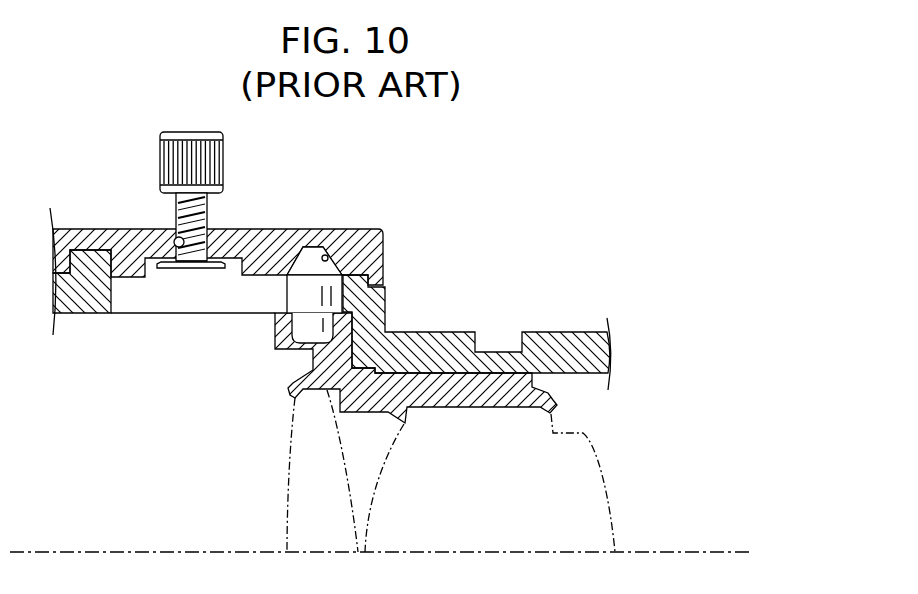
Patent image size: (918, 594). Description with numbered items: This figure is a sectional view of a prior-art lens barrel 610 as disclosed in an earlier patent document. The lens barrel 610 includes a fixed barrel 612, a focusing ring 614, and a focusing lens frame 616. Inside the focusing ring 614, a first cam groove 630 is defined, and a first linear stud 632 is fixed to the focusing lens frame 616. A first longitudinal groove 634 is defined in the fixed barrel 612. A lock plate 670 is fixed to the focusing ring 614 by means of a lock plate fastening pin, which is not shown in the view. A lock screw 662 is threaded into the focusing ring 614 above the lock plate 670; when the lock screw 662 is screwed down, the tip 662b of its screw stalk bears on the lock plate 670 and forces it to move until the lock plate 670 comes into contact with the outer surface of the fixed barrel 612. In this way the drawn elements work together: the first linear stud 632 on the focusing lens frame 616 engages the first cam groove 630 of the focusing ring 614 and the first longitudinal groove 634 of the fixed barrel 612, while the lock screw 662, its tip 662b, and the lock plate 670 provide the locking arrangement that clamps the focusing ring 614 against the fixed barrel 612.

The lens barrel 610 is at (517, 229).
The fixed barrel 612 is at (557, 352).
The focusing ring 614 is at (383, 250).
The focusing lens frame 616 is at (450, 390).
The first cam groove 630 is at (332, 267).
The first linear stud 632 is at (320, 300).
The first longitudinal groove 634 is at (183, 287).
The lock screw 662 is at (160, 155).
The tip of the screw stalk 662b is at (193, 268).
The lock plate 670 is at (165, 268).